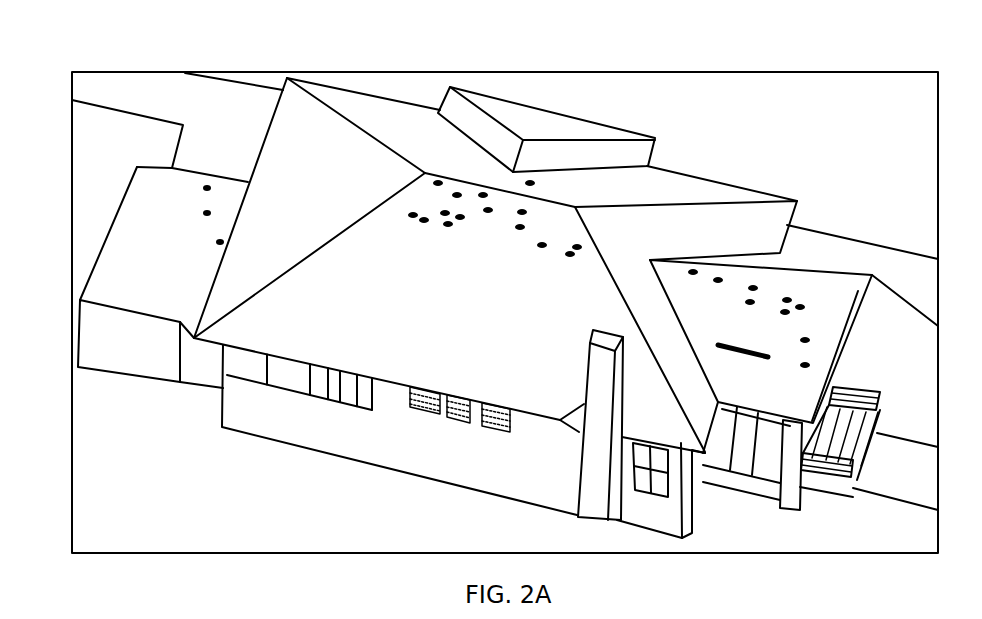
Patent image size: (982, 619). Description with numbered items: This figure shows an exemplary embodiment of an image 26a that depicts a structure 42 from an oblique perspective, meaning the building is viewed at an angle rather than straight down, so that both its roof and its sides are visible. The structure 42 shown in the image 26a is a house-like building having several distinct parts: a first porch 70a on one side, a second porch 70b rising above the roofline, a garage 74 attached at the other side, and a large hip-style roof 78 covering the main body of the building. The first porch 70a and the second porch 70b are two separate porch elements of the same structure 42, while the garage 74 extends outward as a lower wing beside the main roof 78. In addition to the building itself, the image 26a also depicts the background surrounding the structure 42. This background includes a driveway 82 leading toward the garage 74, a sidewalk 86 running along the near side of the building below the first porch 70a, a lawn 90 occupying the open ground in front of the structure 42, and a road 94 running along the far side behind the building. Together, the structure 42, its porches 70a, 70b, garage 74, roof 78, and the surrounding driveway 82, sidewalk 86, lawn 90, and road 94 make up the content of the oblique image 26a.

The image 26a is at (470, 47).
The road 94 is at (95, 108).
The driveway 82 is at (175, 145).
The garage 74 is at (142, 380).
The roof 78 is at (430, 319).
The second porch 70b is at (597, 122).
The structure 42 is at (730, 183).
The lawn 90 is at (310, 516).
The first porch 70a is at (857, 387).
The sidewalk 86 is at (907, 505).